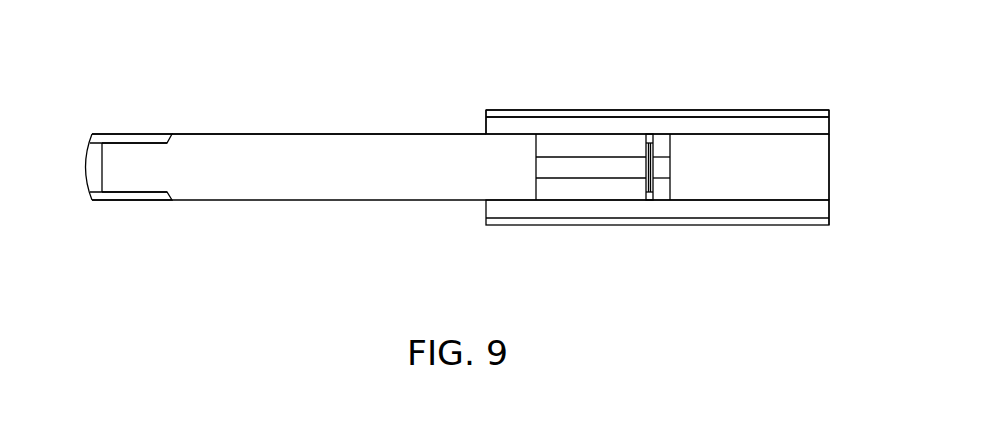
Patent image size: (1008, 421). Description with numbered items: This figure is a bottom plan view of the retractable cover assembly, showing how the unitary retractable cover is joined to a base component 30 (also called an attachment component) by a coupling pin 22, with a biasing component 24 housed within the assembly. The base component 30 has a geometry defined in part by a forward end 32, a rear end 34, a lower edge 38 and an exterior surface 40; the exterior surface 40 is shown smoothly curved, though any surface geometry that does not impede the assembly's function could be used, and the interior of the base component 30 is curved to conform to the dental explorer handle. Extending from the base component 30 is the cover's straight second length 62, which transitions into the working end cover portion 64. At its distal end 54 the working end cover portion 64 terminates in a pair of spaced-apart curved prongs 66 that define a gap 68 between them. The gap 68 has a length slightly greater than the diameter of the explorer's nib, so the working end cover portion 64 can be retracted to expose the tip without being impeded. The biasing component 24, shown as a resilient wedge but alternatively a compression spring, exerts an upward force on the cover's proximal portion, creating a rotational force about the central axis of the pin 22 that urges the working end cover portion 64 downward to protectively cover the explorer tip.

The coupling pin 22 is at (650, 165).
The biasing component 24 is at (733, 180).
The base component 30 is at (650, 104).
The forward end 32 is at (486, 125).
The rear end 34 is at (830, 125).
The lower edge 38 is at (725, 123).
The exterior surface 40 is at (546, 113).
The distal end 54 is at (73, 204).
The straight second length 62 is at (438, 138).
The working end cover portion 64 is at (277, 134).
The curved prongs 66 is at (147, 141).
The gap 68 is at (171, 177).